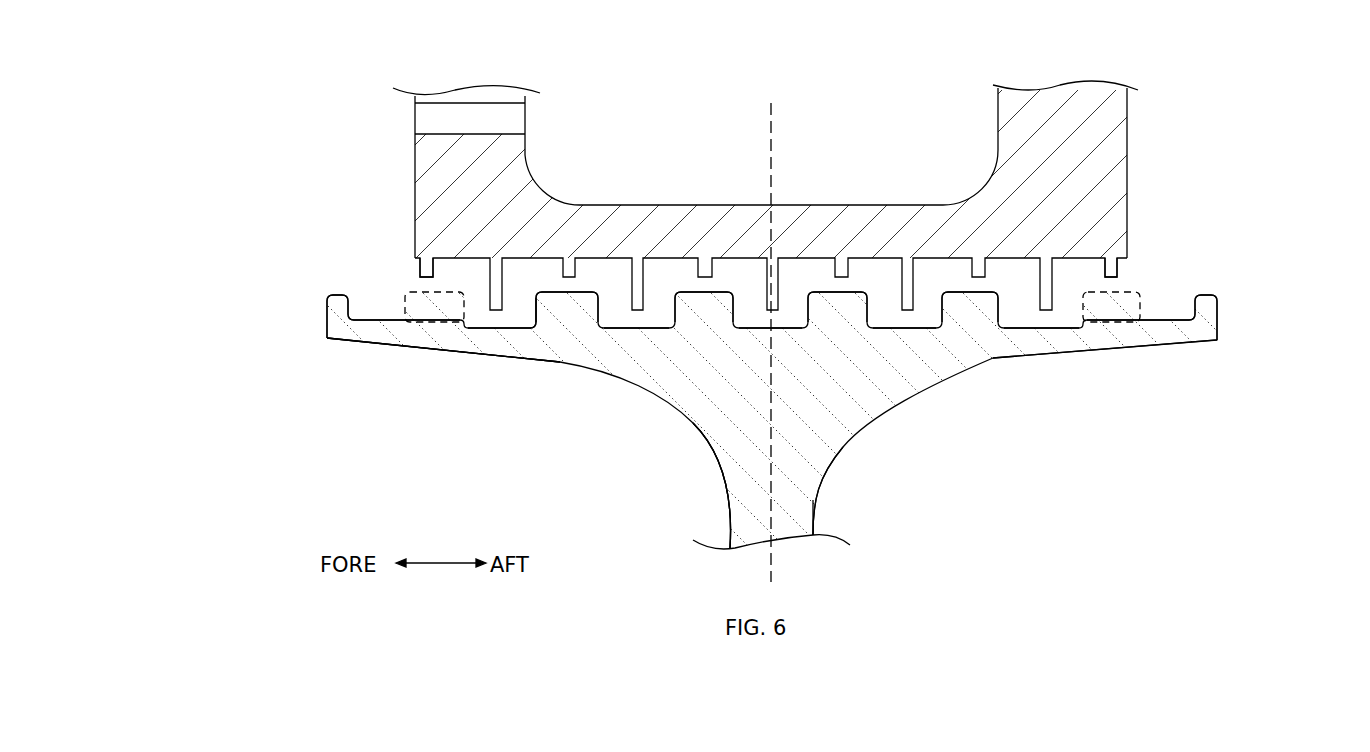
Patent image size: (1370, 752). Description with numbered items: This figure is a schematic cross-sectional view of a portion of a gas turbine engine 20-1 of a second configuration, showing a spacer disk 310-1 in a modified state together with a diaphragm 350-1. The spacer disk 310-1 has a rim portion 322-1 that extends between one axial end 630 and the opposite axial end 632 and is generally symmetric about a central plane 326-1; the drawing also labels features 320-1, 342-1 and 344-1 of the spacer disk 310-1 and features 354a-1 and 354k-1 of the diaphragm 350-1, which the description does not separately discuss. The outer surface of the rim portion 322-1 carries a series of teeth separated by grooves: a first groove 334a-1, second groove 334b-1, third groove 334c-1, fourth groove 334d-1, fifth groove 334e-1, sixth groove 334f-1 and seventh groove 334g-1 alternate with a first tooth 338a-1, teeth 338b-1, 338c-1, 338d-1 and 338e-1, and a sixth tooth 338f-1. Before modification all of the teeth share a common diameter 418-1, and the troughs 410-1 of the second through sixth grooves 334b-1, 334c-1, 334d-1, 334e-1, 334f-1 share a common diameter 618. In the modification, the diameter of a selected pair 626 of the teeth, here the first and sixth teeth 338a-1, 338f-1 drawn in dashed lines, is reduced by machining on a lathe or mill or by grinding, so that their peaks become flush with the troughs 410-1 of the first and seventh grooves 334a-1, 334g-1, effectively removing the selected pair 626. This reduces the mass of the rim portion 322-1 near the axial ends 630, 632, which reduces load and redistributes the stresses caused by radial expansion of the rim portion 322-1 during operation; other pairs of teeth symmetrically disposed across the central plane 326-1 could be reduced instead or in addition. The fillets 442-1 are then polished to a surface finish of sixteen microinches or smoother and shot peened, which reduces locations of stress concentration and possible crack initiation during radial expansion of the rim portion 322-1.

The gas turbine engine 20-1 is at (318, 148).
The diaphragm 350-1 is at (1168, 140).
The stator seal tooth 354a-1 is at (463, 257).
The stator seal tooth 354k-1 is at (1103, 270).
The spacer disk 310-1 is at (860, 485).
The rotor disk neck 320-1 is at (832, 520).
The central plane 326-1 is at (770, 510).
The fillets 442-1 is at (717, 440).
The forward lip 342-1 is at (327, 302).
The aft lip 344-1 is at (1215, 296).
The axial end 630 is at (327, 328).
The axial end 632 is at (1217, 325).
The rim portion 322-1 is at (383, 362).
The first tooth 338a-1 is at (430, 308).
The tooth 338b-1 is at (592, 303).
The tooth 338c-1 is at (713, 320).
The tooth 338d-1 is at (837, 313).
The tooth 338e-1 is at (960, 300).
The sixth tooth 338f-1 is at (1110, 305).
The selected pair 626 is at (392, 297).
The first groove 334a-1 is at (377, 318).
The second groove 334b-1 is at (477, 328).
The third groove 334c-1 is at (613, 330).
The fourth groove 334d-1 is at (788, 328).
The fifth groove 334e-1 is at (907, 328).
The sixth groove 334f-1 is at (1038, 328).
The seventh groove 334g-1 is at (1162, 322).
The troughs 410-1 is at (527, 323).
The common diameter 618 is at (629, 340).
The common diameter 418-1 is at (988, 308).